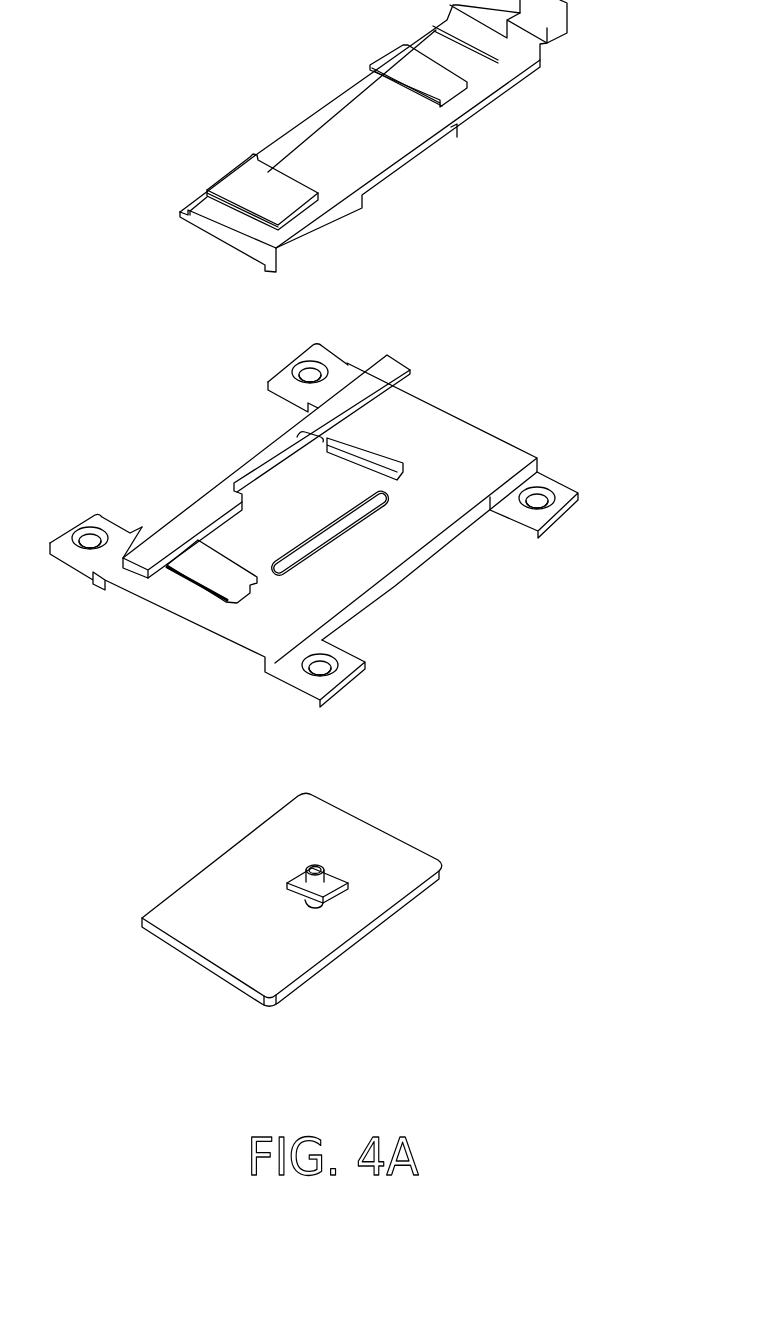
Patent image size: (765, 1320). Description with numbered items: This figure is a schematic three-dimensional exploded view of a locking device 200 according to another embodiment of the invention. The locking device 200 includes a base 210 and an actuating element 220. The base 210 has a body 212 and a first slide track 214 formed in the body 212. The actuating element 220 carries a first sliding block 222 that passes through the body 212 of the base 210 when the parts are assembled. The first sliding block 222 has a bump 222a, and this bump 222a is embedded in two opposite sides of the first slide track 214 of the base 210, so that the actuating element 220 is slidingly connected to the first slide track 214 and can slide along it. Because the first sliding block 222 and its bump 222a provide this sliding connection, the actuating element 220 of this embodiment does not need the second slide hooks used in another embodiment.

The locking device 200 is at (627, 1019).
The base 210 is at (335, 525).
The body 212 is at (440, 420).
The first slide track 214 is at (330, 539).
The actuating element 220 is at (314, 886).
The first sliding block 222 is at (387, 945).
The bump 222a is at (327, 896).